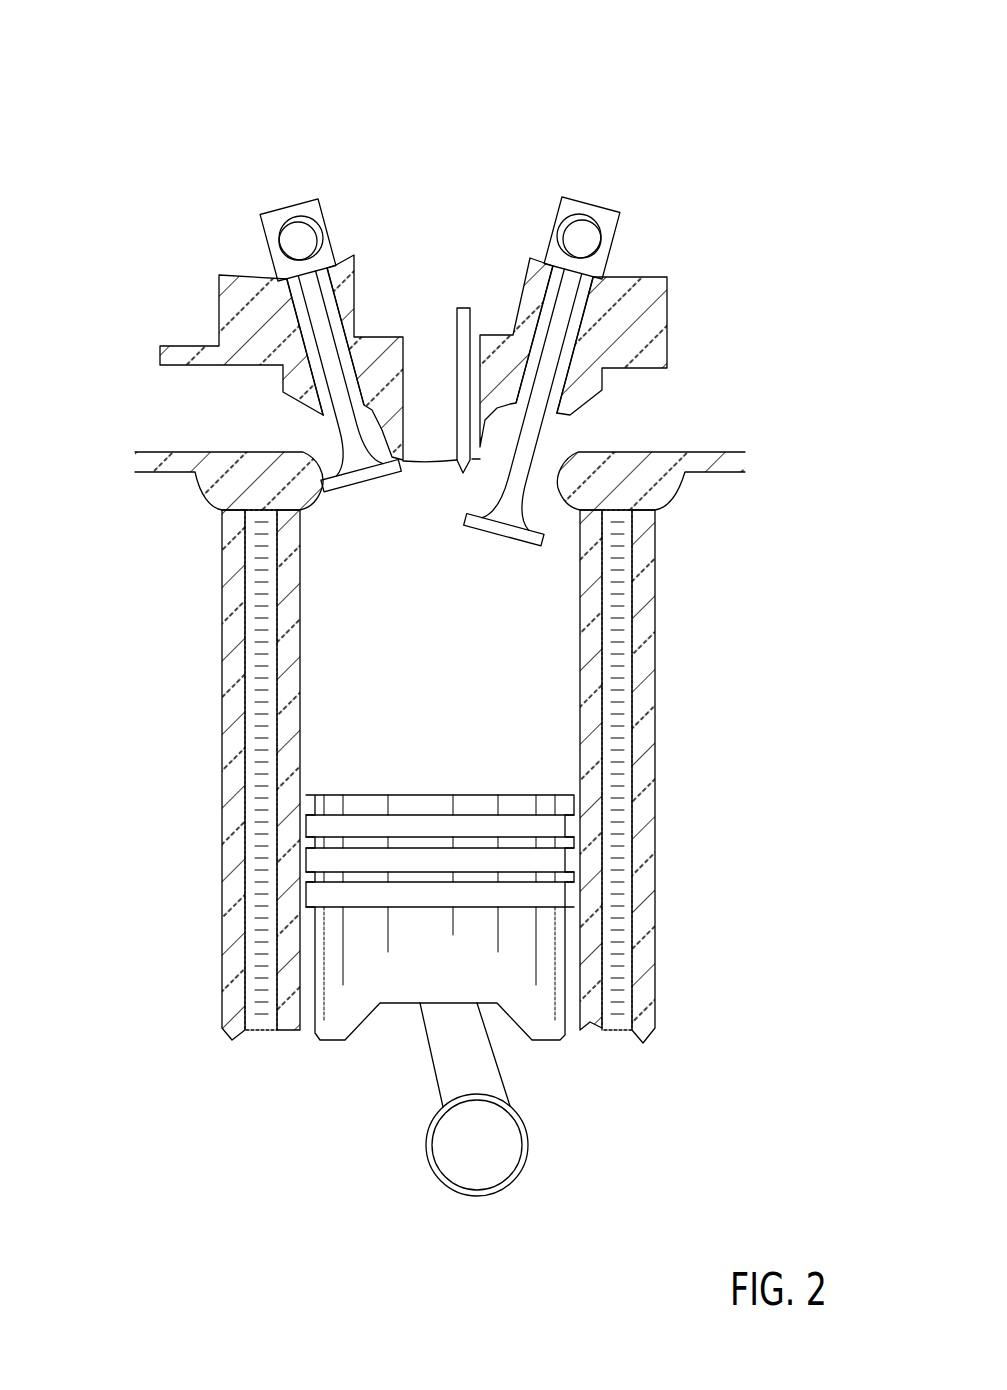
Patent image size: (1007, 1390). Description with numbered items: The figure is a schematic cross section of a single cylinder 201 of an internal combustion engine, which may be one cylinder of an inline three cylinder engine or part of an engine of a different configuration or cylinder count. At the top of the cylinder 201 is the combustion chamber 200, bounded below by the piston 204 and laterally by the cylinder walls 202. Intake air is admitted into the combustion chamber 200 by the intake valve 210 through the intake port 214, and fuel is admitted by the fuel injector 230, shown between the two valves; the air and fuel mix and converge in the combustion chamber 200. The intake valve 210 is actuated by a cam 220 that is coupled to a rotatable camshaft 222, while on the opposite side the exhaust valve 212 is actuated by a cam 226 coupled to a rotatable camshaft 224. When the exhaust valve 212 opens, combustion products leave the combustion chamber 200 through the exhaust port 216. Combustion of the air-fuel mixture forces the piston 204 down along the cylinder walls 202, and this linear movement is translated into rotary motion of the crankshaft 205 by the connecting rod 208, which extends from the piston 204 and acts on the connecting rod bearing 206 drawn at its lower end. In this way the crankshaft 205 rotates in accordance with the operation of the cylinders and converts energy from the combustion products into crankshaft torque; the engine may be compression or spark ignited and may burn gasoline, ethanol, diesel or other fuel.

The combustion chamber 200 is at (451, 711).
The cylinder 201 is at (148, 68).
The cylinder walls 202 is at (288, 1033).
The piston 204 is at (363, 983).
The crankshaft 205 is at (472, 1190).
The connecting rod bearing 206 is at (528, 1152).
The connecting rod 208 is at (500, 1070).
The intake valve 210 is at (345, 440).
The exhaust valve 212 is at (520, 487).
The intake port 214 is at (224, 425).
The exhaust port 216 is at (666, 423).
The cam 220 is at (317, 199).
The camshaft 222 is at (328, 230).
The camshaft 224 is at (600, 227).
The cam 226 is at (580, 214).
The fuel injector 230 is at (457, 307).